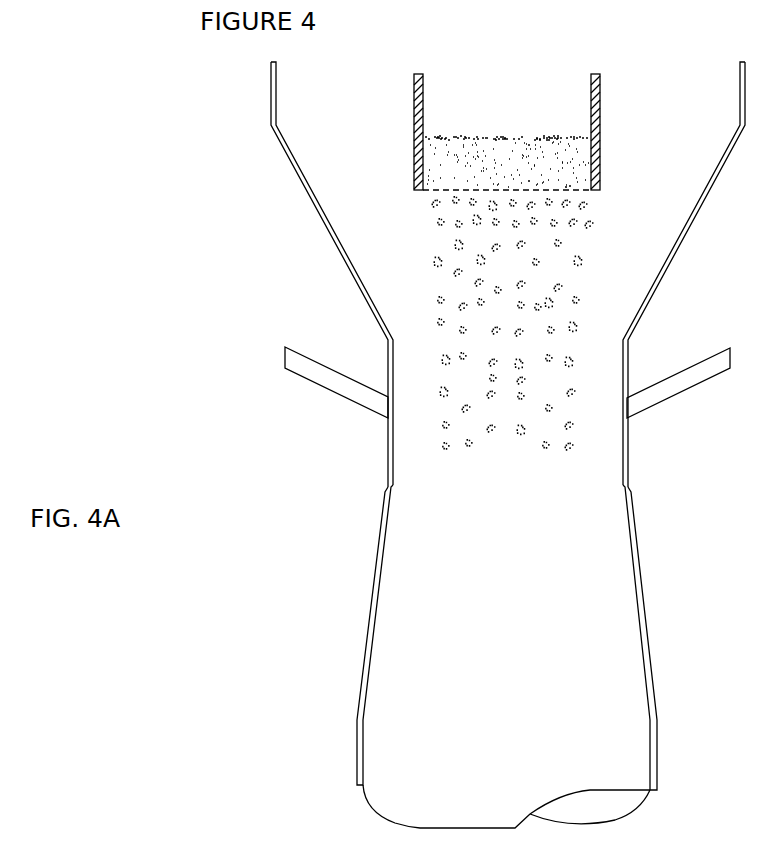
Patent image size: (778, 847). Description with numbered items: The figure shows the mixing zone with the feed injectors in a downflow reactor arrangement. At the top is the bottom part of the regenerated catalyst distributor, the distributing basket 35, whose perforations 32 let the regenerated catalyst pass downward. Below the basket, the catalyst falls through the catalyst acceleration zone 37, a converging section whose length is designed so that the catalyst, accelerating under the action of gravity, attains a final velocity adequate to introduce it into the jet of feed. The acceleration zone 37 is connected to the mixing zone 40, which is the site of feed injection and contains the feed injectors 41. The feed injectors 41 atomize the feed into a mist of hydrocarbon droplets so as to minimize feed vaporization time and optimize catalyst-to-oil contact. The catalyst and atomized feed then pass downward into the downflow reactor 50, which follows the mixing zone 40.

The perforations 32 is at (483, 191).
The distributing basket 35 is at (414, 157).
The catalyst acceleration zone 37 is at (353, 283).
The mixing zone 40 is at (505, 435).
The feed injectors 41 is at (285, 362).
The downflow reactor 50 is at (357, 747).